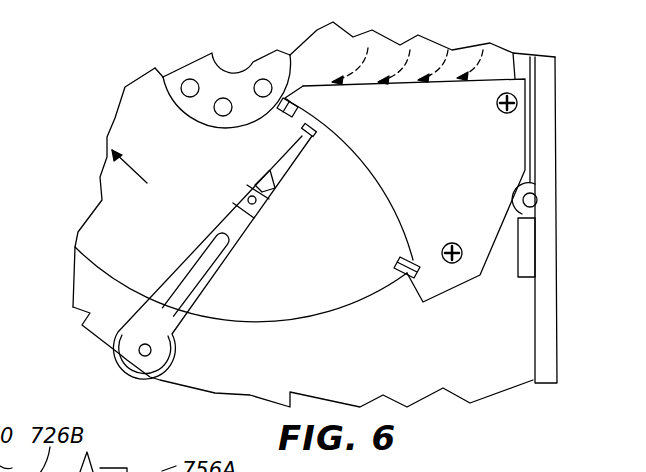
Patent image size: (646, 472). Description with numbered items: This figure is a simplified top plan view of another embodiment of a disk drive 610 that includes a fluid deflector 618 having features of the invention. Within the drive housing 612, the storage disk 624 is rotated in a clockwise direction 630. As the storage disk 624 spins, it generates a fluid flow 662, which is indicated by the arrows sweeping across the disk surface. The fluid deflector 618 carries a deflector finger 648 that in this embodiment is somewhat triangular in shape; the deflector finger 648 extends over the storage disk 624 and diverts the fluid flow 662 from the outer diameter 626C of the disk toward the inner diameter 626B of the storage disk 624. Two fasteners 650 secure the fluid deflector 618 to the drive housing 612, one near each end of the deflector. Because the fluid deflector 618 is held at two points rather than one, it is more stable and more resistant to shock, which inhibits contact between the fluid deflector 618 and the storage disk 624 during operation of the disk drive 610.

The disk drive 610 is at (597, 20).
The drive housing 612 is at (498, 323).
The fluid deflector 618 is at (472, 150).
The storage disk 624 is at (128, 123).
The inner diameter 626B is at (153, 80).
The outer diameter 626C is at (93, 237).
The clockwise rotation 630 is at (118, 172).
The deflector finger 648 is at (478, 170).
The fasteners 650 is at (517, 103).
The fluid flow 662 is at (363, 62).